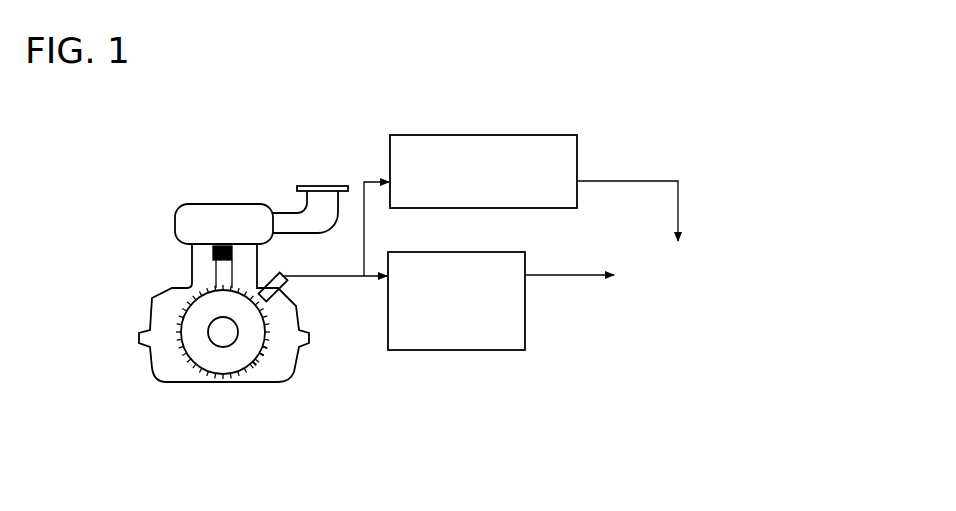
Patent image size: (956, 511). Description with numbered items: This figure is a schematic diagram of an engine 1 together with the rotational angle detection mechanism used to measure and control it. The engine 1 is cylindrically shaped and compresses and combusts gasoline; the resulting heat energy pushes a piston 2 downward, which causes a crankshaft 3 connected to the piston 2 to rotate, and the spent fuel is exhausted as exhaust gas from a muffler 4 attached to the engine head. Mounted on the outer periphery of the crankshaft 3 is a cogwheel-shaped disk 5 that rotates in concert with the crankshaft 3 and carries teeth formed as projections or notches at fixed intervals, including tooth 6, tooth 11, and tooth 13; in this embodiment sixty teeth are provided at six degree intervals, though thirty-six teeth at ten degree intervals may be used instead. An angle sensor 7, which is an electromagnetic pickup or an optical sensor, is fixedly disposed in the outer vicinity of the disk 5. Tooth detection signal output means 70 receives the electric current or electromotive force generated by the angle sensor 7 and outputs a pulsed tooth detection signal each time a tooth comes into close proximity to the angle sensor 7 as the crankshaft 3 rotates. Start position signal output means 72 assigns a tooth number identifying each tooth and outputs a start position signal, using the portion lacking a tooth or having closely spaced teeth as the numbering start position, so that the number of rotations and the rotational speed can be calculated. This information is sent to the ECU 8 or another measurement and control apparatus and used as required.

The engine 1 is at (158, 426).
The piston 2 is at (210, 252).
The crankshaft 3 is at (209, 327).
The muffler 4 is at (303, 208).
The disk 5 is at (197, 342).
The tooth 6 is at (262, 368).
The angle sensor 7 is at (288, 300).
The ECU 8 is at (711, 269).
The tooth 11 is at (263, 356).
The tooth 13 is at (267, 349).
The tooth detection signal output means 70 is at (528, 318).
The start position signal output means 72 is at (465, 208).